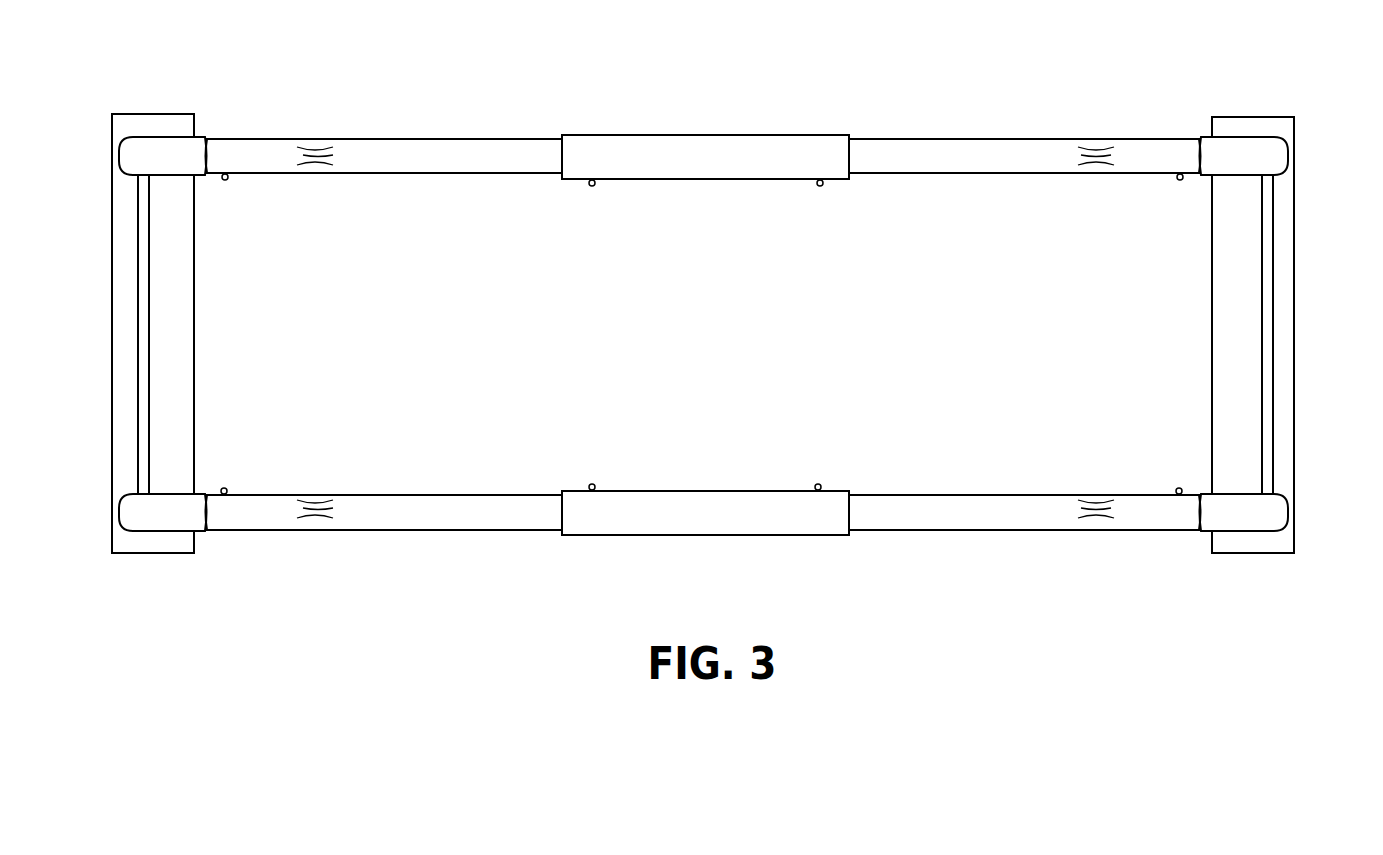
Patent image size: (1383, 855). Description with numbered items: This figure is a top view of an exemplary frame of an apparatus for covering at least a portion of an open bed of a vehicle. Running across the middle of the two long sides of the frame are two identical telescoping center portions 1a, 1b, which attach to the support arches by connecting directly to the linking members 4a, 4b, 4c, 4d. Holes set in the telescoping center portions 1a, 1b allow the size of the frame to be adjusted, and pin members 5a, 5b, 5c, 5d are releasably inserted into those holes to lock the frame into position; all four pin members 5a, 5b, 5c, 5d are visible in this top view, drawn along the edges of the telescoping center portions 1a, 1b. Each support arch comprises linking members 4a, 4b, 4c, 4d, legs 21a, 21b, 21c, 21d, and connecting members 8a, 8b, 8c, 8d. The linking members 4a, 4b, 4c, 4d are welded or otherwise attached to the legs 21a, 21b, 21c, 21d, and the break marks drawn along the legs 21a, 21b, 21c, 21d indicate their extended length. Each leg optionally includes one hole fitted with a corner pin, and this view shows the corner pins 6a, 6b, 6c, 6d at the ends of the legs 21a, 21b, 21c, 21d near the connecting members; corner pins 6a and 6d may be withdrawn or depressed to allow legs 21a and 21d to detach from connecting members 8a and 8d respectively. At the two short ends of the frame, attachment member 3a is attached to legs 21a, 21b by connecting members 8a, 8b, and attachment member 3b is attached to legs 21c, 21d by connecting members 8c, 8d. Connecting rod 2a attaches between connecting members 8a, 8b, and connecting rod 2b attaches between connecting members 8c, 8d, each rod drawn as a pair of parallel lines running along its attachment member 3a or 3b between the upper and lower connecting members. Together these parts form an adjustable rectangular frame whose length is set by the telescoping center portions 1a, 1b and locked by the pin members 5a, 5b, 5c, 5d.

The telescoping center portion 1a is at (722, 135).
The telescoping center portion 1b is at (722, 535).
The connecting rod 2a is at (1262, 372).
The connecting rod 2b is at (149, 330).
The attachment member 3a is at (1294, 425).
The attachment member 3b is at (112, 330).
The linking member 4a is at (978, 139).
The linking member 4b is at (452, 139).
The linking member 4c is at (978, 530).
The linking member 4d is at (452, 530).
The pin member 5a is at (820, 187).
The pin member 5b is at (592, 187).
The pin member 5c is at (818, 483).
The pin member 5d is at (592, 483).
The corner pin 6a is at (1179, 181).
The corner pin 6b is at (1178, 487).
The corner pin 6c is at (225, 487).
The corner pin 6d is at (226, 181).
The connecting member 8a is at (1258, 137).
The connecting member 8b is at (1258, 531).
The connecting member 8c is at (160, 531).
The connecting member 8d is at (160, 137).
The leg 21a is at (1148, 139).
The leg 21b is at (1148, 530).
The leg 21c is at (262, 530).
The leg 21d is at (262, 139).